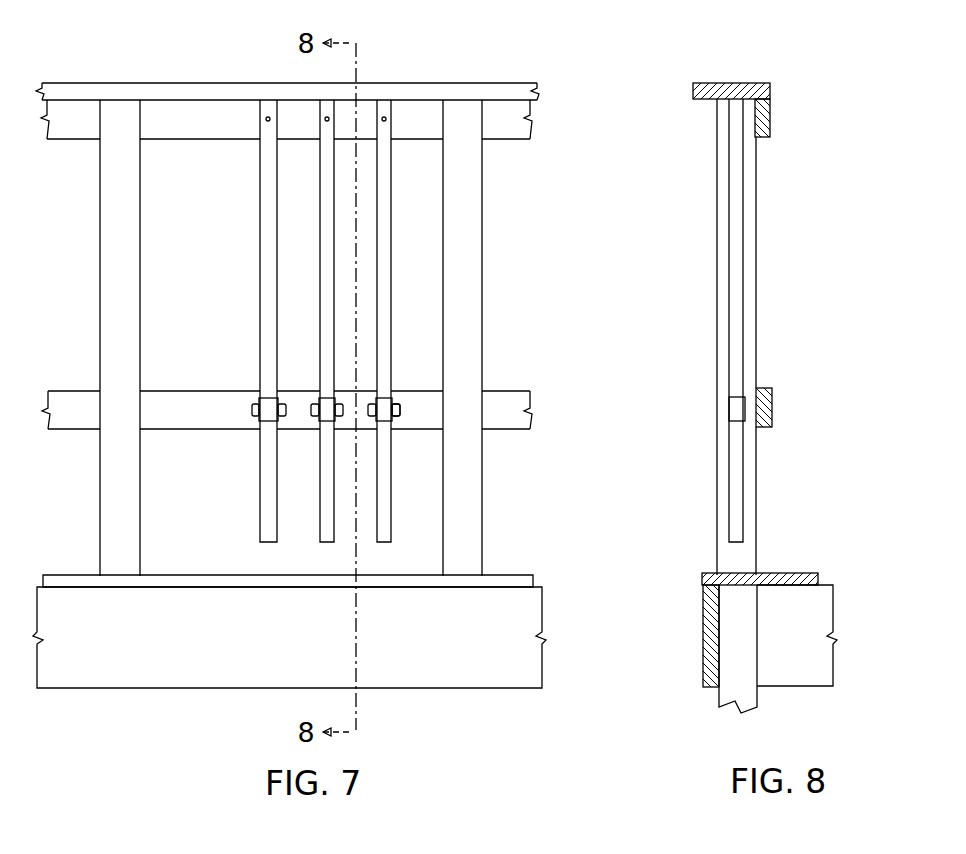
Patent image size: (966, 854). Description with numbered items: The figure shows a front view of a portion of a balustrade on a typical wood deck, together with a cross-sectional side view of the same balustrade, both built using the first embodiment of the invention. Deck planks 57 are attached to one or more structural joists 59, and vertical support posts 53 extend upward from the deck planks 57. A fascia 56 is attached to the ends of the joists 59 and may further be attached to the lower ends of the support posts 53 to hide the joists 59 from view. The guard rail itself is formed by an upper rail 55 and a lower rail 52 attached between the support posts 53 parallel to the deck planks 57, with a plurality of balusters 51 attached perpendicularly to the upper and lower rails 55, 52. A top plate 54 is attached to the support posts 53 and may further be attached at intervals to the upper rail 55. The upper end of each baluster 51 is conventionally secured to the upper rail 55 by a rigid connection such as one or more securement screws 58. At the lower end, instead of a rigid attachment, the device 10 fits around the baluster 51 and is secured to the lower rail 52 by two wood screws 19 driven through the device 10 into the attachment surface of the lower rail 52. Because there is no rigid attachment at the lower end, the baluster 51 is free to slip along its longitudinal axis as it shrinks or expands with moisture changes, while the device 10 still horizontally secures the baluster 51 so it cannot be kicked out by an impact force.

In FIG. 7, the device 10 is at (268, 410).
In FIG. 8, the device 10 is at (735, 408).
In FIG. 7, the wood screws 19 is at (398, 408).
In FIG. 7, the baluster 51 is at (268, 220).
In FIG. 8, the baluster 51 is at (750, 225).
In FIG. 7, the lower rail 52 is at (510, 412).
In FIG. 8, the lower rail 52 is at (770, 412).
In FIG. 7, the vertical support posts 53 is at (120, 238).
In FIG. 8, the vertical support posts 53 is at (736, 337).
In FIG. 7, the top plate 54 is at (510, 92).
In FIG. 8, the top plate 54 is at (713, 83).
In FIG. 7, the upper rail 55 is at (505, 125).
In FIG. 8, the upper rail 55 is at (768, 122).
In FIG. 7, the fascia 56 is at (512, 668).
In FIG. 8, the fascia 56 is at (770, 636).
In FIG. 7, the deck planks 57 is at (510, 578).
In FIG. 8, the deck planks 57 is at (790, 578).
In FIG. 7, the securement screws 58 is at (383, 119).
In FIG. 8, the structural joists 59 is at (835, 675).